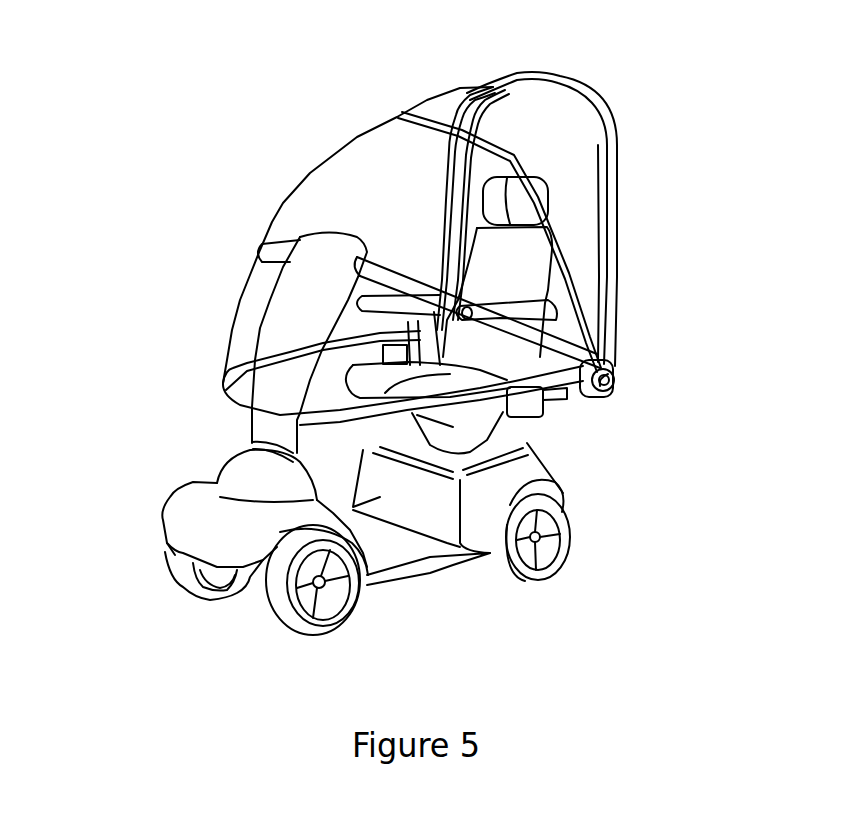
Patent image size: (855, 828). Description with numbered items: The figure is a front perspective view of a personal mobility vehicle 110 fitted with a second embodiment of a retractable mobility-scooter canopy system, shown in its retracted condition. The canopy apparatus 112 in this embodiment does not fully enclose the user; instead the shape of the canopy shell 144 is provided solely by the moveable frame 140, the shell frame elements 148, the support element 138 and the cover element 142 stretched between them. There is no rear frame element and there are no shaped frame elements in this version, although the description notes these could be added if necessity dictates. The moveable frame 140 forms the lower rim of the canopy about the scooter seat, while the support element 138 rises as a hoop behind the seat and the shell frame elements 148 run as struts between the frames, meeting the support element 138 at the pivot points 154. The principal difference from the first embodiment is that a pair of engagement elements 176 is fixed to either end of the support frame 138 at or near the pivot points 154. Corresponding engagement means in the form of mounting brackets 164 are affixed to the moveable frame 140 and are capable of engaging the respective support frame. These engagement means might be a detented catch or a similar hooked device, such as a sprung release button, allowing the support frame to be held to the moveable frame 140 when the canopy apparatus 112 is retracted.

The personal mobility vehicle (scooter) 110 is at (185, 473).
The canopy apparatus 112 is at (422, 236).
The support element 138 is at (610, 260).
The moveable frame 140 is at (222, 387).
The cover element 142 is at (372, 160).
The canopy shell 144 is at (247, 270).
The shell frame elements 148 is at (425, 265).
The pivot points 154 is at (603, 355).
The mounting brackets 164 is at (528, 413).
The engagement elements 176 is at (583, 384).